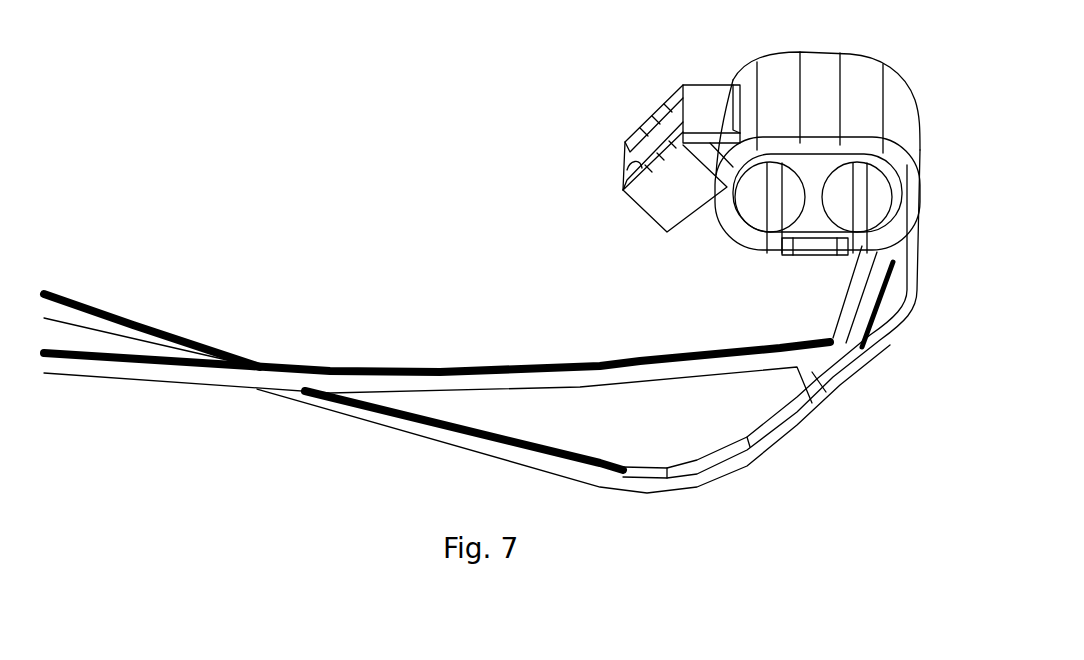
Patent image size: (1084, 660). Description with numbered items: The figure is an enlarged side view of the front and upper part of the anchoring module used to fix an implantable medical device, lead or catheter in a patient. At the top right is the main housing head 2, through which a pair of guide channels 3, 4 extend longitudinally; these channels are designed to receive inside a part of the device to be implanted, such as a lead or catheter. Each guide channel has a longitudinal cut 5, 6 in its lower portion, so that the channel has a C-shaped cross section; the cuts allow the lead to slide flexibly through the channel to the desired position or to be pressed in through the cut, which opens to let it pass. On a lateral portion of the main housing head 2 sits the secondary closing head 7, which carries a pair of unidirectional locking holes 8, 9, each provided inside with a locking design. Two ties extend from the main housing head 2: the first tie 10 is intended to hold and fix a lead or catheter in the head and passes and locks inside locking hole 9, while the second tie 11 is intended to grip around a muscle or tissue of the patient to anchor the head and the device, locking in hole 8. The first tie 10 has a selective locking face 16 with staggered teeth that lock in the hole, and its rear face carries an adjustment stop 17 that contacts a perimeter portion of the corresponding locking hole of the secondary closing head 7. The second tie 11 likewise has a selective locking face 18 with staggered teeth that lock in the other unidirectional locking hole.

The main housing head 2 is at (830, 63).
The guide channel 3 is at (884, 190).
The guide channel 4 is at (743, 205).
The longitudinal cut 5 is at (858, 243).
The longitudinal cut 6 is at (773, 238).
The secondary closing head 7 is at (710, 100).
The unidirectional locking hole 8 is at (640, 122).
The unidirectional locking hole 9 is at (627, 167).
The first tie 10 is at (569, 358).
The second tie 11 is at (385, 450).
The selective locking face 16 is at (360, 370).
The adjustment stop 17 is at (815, 372).
The selective locking face 18 is at (133, 323).